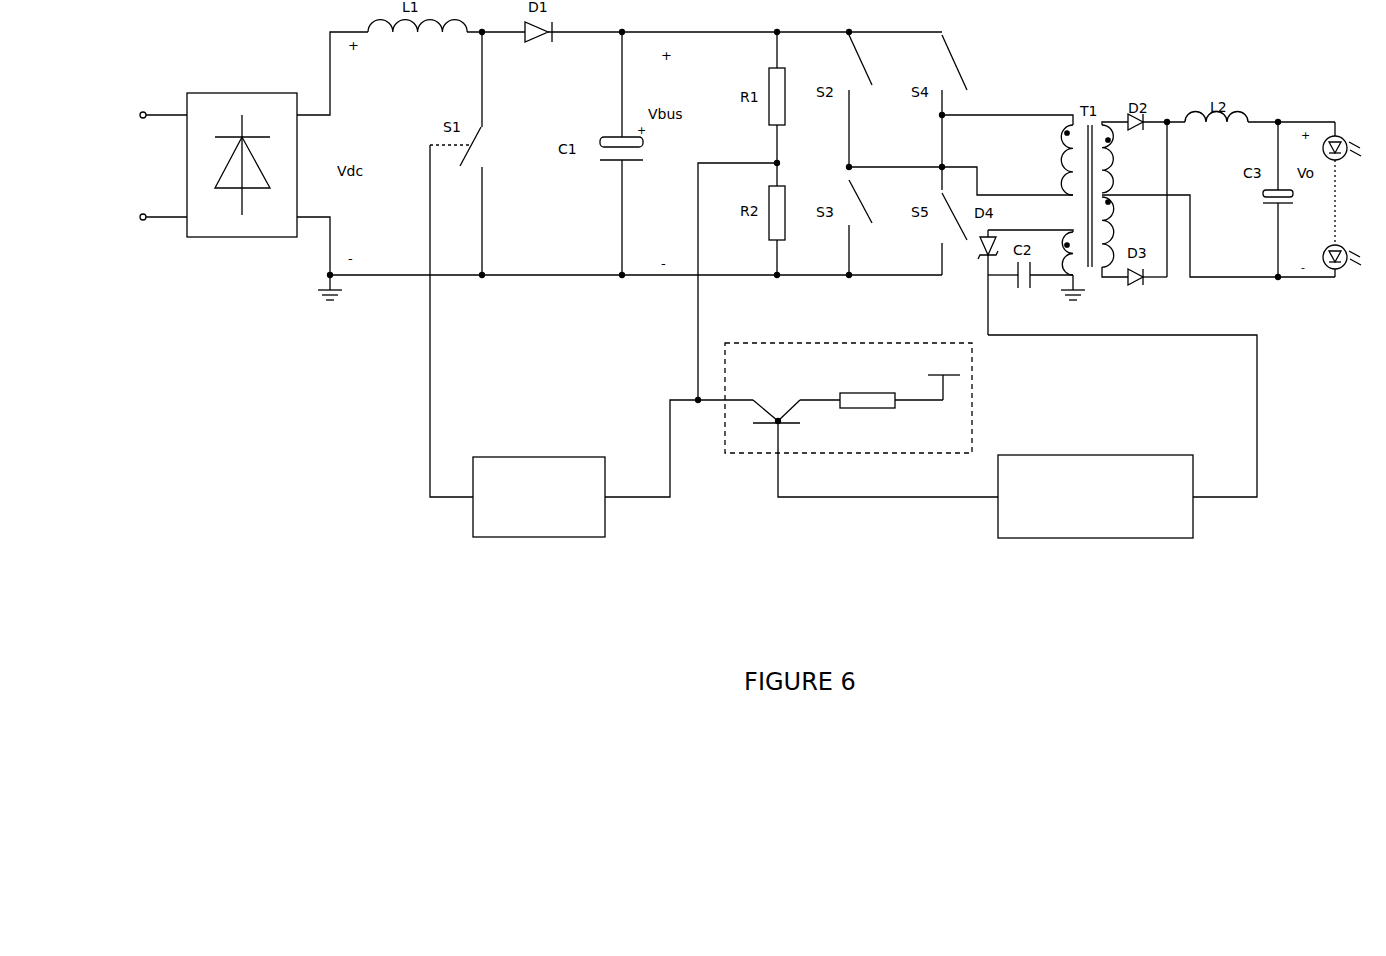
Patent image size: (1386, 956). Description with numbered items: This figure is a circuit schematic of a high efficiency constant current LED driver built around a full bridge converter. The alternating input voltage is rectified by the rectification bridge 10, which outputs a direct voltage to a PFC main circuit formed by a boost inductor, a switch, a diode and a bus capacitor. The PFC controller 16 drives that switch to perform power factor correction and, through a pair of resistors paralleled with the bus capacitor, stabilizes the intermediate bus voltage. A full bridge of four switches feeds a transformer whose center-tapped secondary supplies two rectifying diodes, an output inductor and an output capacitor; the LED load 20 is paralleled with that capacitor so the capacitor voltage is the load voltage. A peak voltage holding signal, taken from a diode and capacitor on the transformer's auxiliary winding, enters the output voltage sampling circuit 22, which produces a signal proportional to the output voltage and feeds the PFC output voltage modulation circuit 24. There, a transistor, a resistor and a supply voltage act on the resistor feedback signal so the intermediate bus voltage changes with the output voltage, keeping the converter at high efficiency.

The rectification bridge 10 is at (265, 88).
The PFC controller 16 is at (605, 525).
The LED load 20 is at (1345, 122).
The output voltage sampling circuit 22 is at (1193, 530).
The PFC output voltage modulation circuit 24 is at (970, 368).